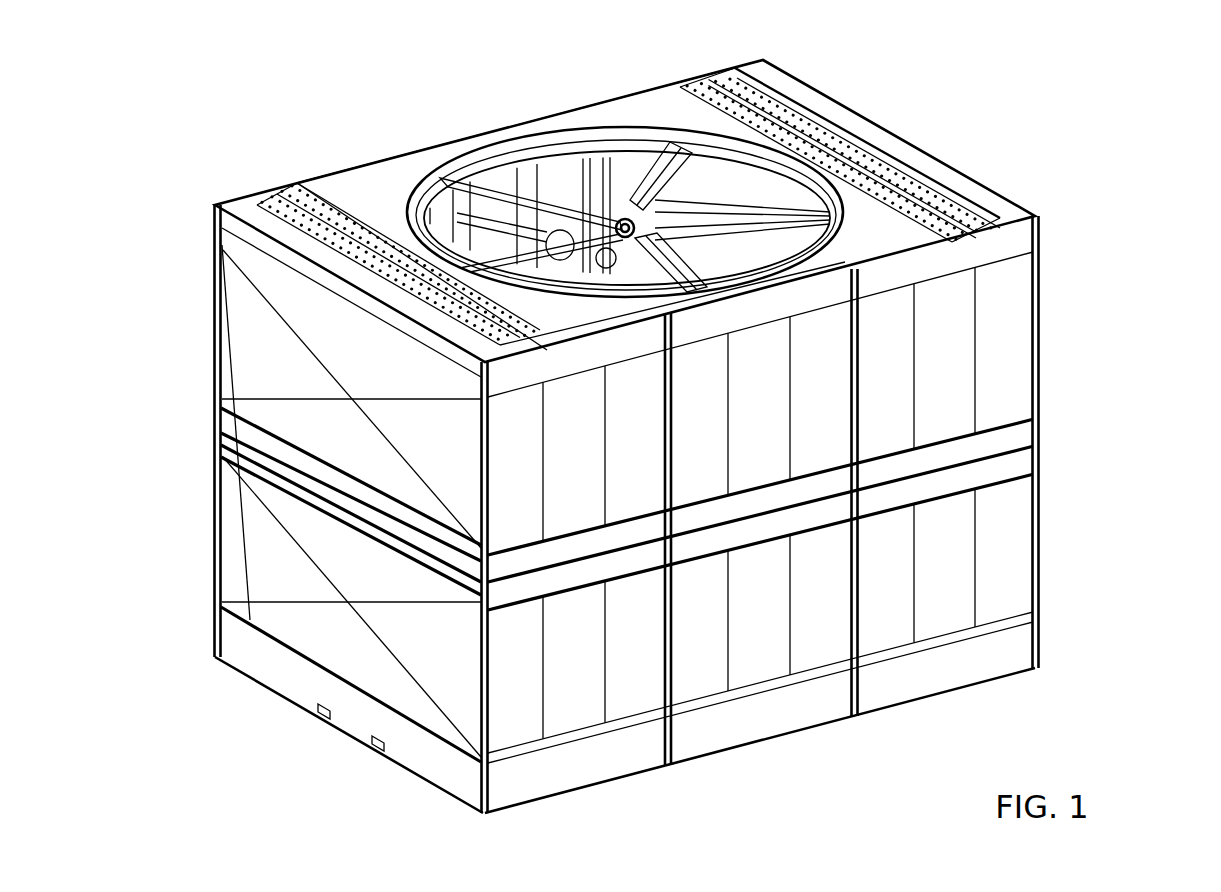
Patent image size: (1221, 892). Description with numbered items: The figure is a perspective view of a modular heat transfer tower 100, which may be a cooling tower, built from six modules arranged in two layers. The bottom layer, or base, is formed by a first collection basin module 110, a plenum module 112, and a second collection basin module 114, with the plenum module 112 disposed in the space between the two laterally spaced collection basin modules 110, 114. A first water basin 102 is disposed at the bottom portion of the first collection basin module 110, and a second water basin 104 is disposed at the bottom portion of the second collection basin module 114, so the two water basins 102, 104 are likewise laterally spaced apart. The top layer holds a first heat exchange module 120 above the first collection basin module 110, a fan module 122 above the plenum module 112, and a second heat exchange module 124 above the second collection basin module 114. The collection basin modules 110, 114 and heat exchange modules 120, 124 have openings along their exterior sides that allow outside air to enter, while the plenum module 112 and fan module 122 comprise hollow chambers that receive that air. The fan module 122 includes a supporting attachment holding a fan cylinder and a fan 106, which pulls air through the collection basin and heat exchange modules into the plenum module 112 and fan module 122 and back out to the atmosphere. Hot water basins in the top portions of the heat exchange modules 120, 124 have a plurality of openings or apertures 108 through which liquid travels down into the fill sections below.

The modular heat transfer tower 100 is at (1050, 143).
The first water basin 102 is at (433, 762).
The second water basin 104 is at (1024, 655).
The fan 106 is at (660, 160).
The openings or apertures 108 is at (268, 200).
The first collection basin module 110 is at (212, 557).
The plenum module 112 is at (780, 740).
The second collection basin module 114 is at (1042, 536).
The first heat exchange module 120 is at (212, 370).
The fan module 122 is at (510, 125).
The second heat exchange module 124 is at (1042, 337).